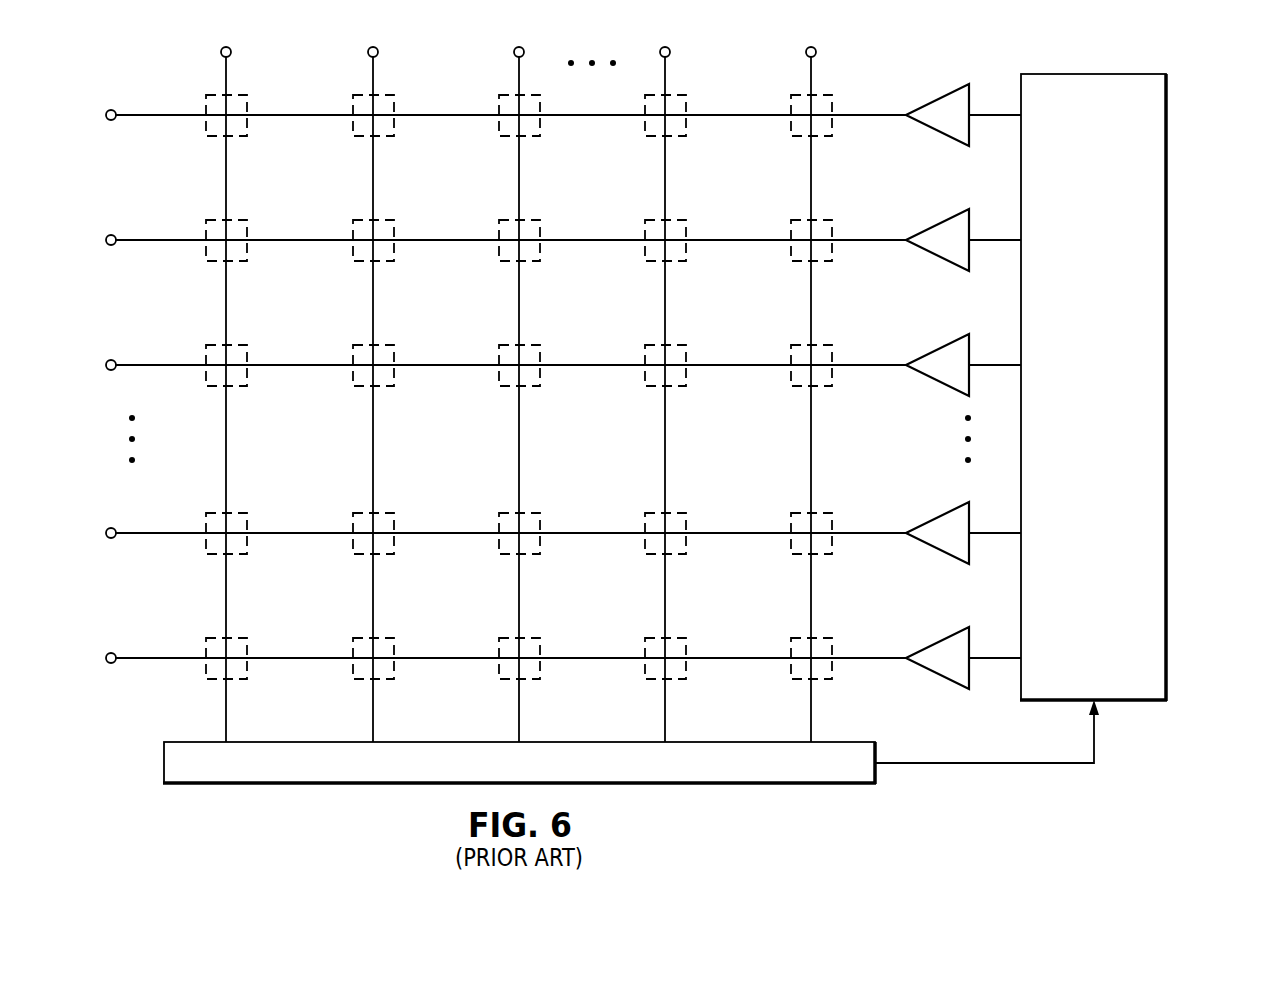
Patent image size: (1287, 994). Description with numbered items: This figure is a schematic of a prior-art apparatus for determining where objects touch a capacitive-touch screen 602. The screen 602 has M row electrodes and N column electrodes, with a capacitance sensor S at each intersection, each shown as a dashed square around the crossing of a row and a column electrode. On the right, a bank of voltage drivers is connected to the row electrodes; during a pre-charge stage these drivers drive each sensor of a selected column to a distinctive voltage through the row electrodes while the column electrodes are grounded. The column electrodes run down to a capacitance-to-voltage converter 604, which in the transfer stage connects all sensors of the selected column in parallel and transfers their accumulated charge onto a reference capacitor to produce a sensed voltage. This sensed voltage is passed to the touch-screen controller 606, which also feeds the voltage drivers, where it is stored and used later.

The capacitive-touch screen 602 is at (1195, 201).
The capacitance-to-voltage converter 604 is at (163, 773).
The touch-screen controller 606 is at (1168, 355).